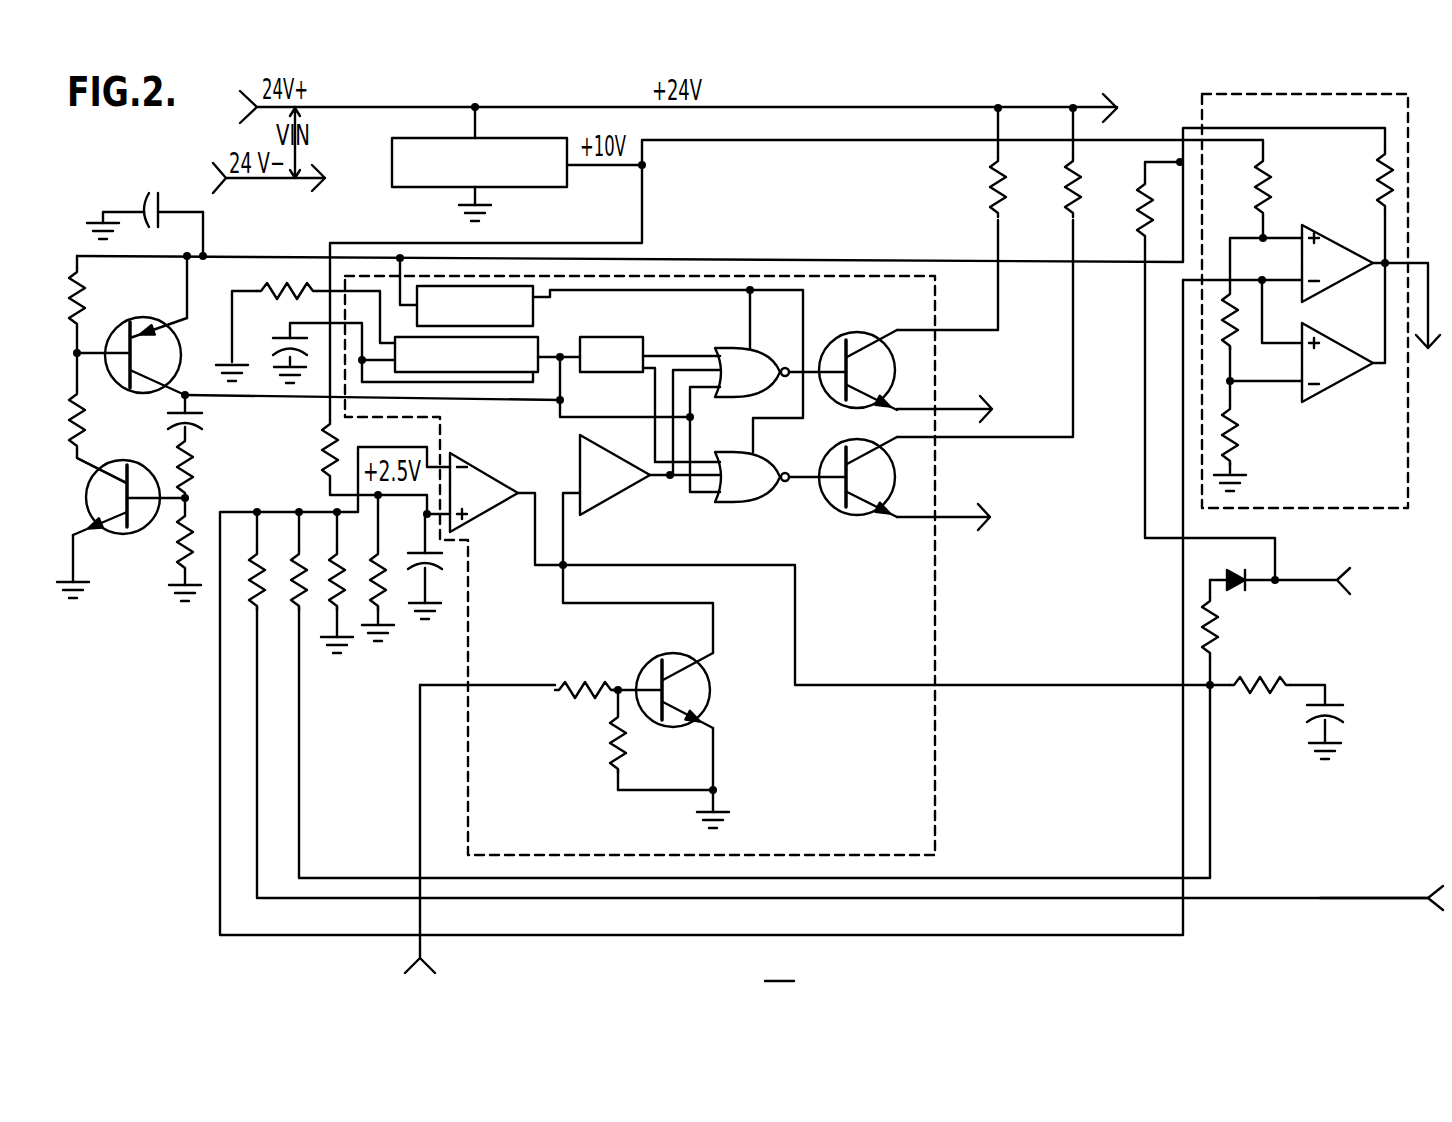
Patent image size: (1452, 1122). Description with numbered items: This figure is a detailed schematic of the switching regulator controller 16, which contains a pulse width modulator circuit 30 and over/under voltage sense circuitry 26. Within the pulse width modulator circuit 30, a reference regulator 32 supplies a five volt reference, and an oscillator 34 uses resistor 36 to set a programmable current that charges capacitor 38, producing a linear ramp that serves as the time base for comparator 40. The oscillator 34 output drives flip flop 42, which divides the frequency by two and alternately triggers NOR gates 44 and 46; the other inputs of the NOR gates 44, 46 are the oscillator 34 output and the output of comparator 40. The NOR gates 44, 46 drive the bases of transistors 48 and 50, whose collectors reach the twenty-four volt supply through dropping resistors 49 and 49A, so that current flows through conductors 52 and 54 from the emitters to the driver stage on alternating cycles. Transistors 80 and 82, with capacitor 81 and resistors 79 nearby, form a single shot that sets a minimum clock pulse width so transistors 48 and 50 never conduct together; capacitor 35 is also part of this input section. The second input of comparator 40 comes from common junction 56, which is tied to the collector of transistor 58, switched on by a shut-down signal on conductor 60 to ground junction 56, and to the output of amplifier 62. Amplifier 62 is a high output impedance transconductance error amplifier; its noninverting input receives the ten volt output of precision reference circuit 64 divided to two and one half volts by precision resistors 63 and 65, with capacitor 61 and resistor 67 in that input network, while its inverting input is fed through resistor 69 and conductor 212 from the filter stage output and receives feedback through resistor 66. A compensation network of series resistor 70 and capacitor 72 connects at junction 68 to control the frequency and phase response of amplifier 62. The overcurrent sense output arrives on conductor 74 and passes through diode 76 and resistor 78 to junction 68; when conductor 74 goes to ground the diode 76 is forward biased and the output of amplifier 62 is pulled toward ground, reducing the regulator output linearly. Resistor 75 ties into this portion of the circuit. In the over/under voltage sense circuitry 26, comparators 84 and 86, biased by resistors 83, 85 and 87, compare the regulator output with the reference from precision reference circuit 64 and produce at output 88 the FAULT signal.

The switching regulator controller 16 is at (779, 966).
The over/under voltage sense circuitry 26 is at (1340, 510).
The pulse width modulator circuit 30 is at (938, 330).
The reference regulator 32 is at (534, 314).
The oscillator 34 is at (540, 355).
The capacitor 35 is at (158, 228).
The resistor 36 is at (268, 302).
The capacitor 38 is at (274, 350).
The comparator 40 is at (638, 464).
The flip flop 42 is at (610, 338).
The NOR gate 44 is at (733, 349).
The NOR gate 46 is at (735, 453).
The transistor 48 is at (852, 338).
The dropping resistor 49 is at (992, 216).
The dropping resistor 49A is at (1066, 218).
The transistor 50 is at (822, 470).
The conductor 52 is at (986, 402).
The conductor 54 is at (984, 512).
The common junction 56 is at (562, 568).
The transistor 58 is at (711, 692).
The conductor 60 is at (418, 946).
The capacitor 61 is at (445, 560).
The amplifier 62 is at (492, 475).
The precision resistor 63 is at (322, 448).
The precision reference circuit 64 is at (560, 188).
The precision resistor 65 is at (382, 604).
The resistor 66 is at (292, 606).
The resistor 67 is at (334, 605).
The junction 68 is at (1214, 684).
The resistor 69 is at (250, 604).
The series resistor 70 is at (1268, 683).
The capacitor 72 is at (1348, 718).
The conductor 74 is at (1300, 582).
The resistor 75 is at (1140, 218).
The diode 76 is at (1234, 574).
The resistor 78 is at (1218, 626).
The resistor 79 is at (92, 280).
The transistor 80 is at (124, 319).
The capacitor 81 is at (204, 422).
The transistor 82 is at (118, 460).
The resistor 83 is at (1256, 218).
The comparator 84 is at (1340, 234).
The resistor 85 is at (1236, 338).
The comparator 86 is at (1346, 334).
The resistor 87 is at (1236, 430).
The output 88 is at (1430, 262).
The conductor 212 is at (1320, 900).